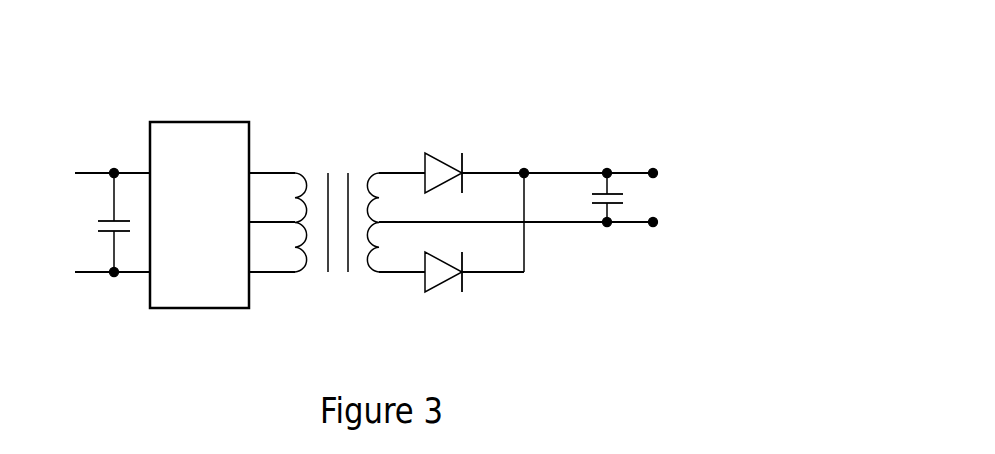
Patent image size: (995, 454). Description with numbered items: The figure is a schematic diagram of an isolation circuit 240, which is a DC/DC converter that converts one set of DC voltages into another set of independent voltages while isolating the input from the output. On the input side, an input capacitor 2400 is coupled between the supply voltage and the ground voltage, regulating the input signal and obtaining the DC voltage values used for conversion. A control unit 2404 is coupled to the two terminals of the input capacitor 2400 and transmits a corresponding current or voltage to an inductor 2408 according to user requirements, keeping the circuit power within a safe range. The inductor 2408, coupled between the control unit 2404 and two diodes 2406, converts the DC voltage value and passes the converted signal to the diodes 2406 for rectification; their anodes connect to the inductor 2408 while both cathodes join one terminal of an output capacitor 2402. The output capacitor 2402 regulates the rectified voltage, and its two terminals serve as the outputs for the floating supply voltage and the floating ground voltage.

The isolation circuit 240 is at (570, 58).
The input capacitor 2400 is at (98, 226).
The output capacitor 2402 is at (625, 200).
The control unit 2404 is at (225, 222).
The diodes 2406 is at (444, 158).
The inductor 2408 is at (338, 275).